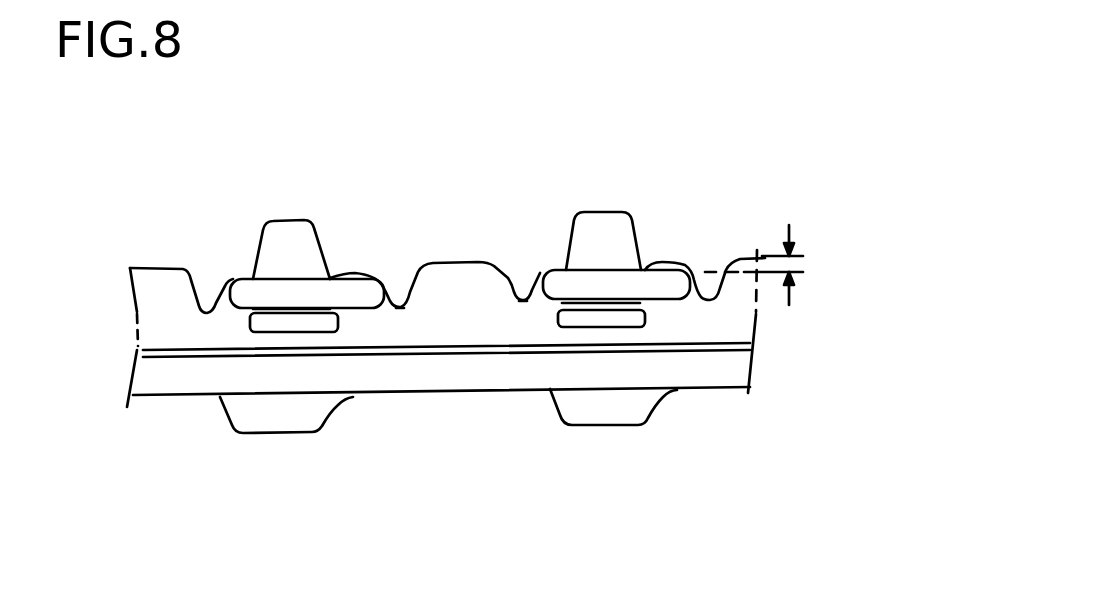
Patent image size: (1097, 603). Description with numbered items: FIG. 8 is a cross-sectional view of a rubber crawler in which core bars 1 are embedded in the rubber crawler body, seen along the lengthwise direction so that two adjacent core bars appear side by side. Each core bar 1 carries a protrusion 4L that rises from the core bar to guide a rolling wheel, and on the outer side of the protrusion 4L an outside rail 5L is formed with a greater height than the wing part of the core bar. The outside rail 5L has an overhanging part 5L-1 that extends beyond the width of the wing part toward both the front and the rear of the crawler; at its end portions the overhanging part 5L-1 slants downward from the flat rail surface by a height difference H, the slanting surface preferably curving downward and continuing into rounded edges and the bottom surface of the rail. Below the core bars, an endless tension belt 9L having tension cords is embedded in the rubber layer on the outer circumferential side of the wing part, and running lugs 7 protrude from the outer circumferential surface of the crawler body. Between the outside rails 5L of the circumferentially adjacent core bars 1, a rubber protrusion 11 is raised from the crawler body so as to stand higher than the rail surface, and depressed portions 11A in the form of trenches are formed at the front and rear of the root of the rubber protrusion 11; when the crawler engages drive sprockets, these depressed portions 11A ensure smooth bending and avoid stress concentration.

The core bar 1 is at (334, 247).
The left protrusion 4L is at (277, 240).
The left outside rail 5L is at (243, 306).
The left overhanging part 5L-1 is at (367, 298).
The running lug 7 is at (640, 426).
The left tension belt 9L is at (410, 357).
The rubber protrusion 11 is at (478, 272).
The depressed portion 11A is at (402, 286).
The height difference H is at (771, 265).